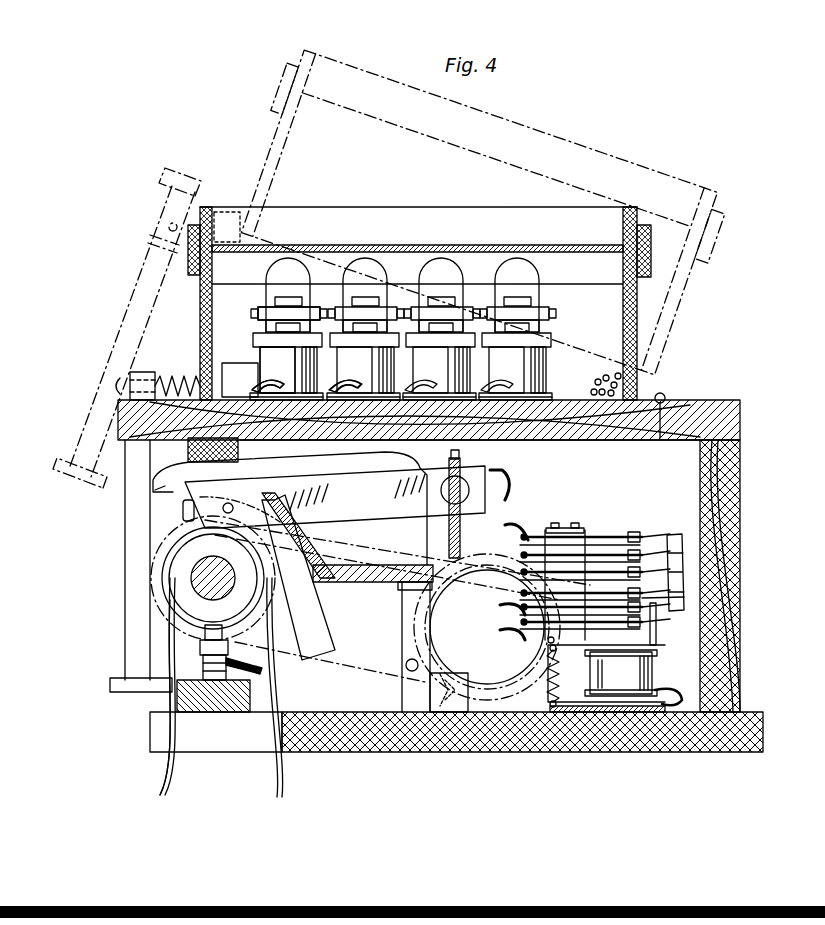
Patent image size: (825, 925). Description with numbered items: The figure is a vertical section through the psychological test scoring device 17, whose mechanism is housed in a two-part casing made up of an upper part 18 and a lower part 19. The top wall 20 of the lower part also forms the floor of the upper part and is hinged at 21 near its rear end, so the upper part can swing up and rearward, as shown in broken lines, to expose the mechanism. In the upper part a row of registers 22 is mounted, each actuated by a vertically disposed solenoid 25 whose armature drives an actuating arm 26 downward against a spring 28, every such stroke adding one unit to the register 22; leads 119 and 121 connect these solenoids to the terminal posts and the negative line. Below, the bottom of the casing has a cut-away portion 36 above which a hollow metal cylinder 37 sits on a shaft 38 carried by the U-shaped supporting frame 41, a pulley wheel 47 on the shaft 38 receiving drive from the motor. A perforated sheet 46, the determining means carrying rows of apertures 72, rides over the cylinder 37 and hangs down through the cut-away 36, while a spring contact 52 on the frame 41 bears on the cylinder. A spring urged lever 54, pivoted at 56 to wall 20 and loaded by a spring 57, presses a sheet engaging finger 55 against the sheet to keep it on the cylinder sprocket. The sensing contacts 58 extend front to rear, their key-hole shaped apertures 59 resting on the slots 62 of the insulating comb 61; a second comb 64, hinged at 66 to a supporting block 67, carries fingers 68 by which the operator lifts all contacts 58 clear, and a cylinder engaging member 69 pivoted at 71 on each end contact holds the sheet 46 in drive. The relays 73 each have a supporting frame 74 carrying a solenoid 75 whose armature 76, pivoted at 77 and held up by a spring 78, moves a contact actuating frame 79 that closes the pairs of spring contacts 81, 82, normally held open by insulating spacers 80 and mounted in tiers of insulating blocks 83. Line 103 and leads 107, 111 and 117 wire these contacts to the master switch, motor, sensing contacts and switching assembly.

The psychological test scoring device 17 is at (745, 462).
The upper part of casing 18 is at (370, 742).
The lower part of casing 19 is at (483, 252).
The top wall 20 is at (620, 441).
The hinge 21 is at (665, 396).
The register 22 is at (372, 268).
The solenoid 25 is at (260, 352).
The actuating arm 26 is at (290, 305).
The spring 28 is at (265, 302).
The cut-away portion 36 is at (228, 742).
The hollow metal cylinder 37 is at (165, 590).
The shaft 38 is at (228, 556).
The U-shaped supporting frame 41 is at (218, 712).
The perforated sheet 46 is at (165, 762).
The pulley wheel 47 is at (372, 665).
The spring contact 52 is at (207, 645).
The spring urged lever 54 is at (140, 296).
The sheet engaging finger 55 is at (130, 686).
The pivot 56 is at (150, 425).
The spring 57 is at (178, 374).
The contact member 58 is at (319, 508).
The key-hole shaped aperture 59 is at (460, 478).
The transverse supporting frame or comb 61 is at (461, 524).
The slot 62 is at (451, 458).
The second comb 64 is at (380, 580).
The hinge 66 is at (412, 598).
The supporting block 67 is at (402, 658).
The finger 68 is at (162, 488).
The cylinder engaging member 69 is at (312, 622).
The pivot 71 is at (231, 505).
The aperture 72 is at (158, 572).
The relay 73 is at (672, 596).
The supporting frame 74 is at (580, 713).
The solenoid 75 is at (652, 676).
The armature 76 is at (660, 648).
The pivot 77 is at (548, 655).
The spring 78 is at (550, 704).
The contact actuating frame 79 is at (658, 632).
The insulating spacer 80 is at (675, 550).
The spring contact 81 is at (652, 532).
The spring contact 82 is at (602, 536).
The block of insulating material 83 is at (582, 510).
The line 103 is at (664, 712).
The lead 107 is at (512, 525).
The lead 111 is at (500, 632).
The lead 117 is at (500, 608).
The lead 119 is at (303, 367).
The lead 121 is at (352, 384).